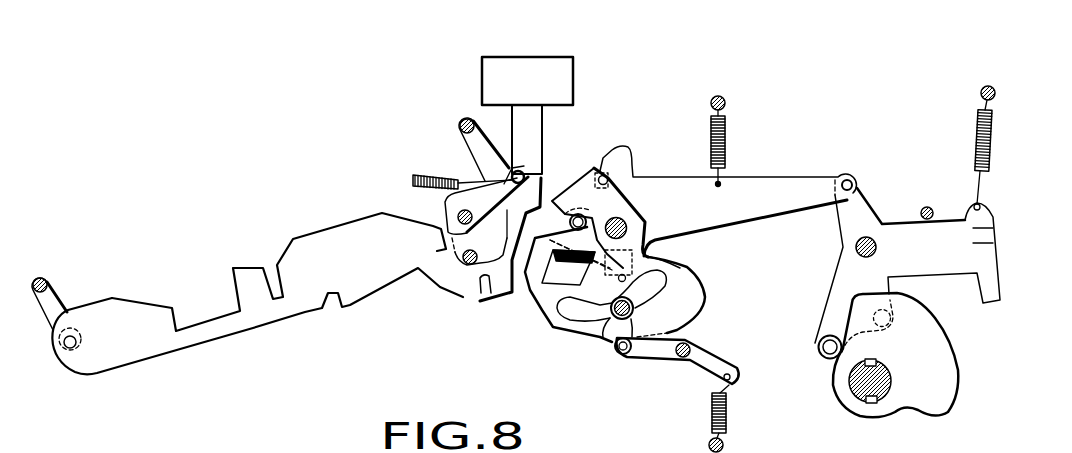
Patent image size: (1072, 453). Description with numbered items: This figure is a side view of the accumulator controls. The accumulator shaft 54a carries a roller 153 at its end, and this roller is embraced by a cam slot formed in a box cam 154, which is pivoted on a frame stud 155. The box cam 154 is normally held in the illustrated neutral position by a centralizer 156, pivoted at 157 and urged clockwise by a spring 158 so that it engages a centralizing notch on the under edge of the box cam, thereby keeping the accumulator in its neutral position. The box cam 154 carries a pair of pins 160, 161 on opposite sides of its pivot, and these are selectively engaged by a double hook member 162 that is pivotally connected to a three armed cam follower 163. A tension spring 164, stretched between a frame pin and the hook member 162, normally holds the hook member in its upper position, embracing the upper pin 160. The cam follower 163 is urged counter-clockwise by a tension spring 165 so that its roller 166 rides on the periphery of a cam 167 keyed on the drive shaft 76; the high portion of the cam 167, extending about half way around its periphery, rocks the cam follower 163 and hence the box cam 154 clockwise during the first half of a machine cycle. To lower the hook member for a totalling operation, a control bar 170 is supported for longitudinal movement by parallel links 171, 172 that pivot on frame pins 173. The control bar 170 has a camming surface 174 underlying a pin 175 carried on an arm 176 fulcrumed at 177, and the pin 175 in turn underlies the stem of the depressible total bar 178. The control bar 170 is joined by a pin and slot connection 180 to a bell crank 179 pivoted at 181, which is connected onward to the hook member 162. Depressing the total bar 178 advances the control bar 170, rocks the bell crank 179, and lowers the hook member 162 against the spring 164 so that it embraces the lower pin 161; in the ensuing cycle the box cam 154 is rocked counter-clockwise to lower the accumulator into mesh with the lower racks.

The control bar 170 is at (305, 312).
The parallel link 171 is at (52, 296).
The frame pin 173 is at (43, 278).
The parallel link 172 is at (462, 138).
The total bar 178 is at (573, 83).
The pin 175 is at (522, 170).
The camming surface 174 is at (530, 193).
The arm 176 is at (450, 197).
The fulcrum 177 is at (457, 220).
The pivot 181 is at (467, 262).
The bell crank 179 is at (520, 252).
The pin and slot connection 180 is at (483, 290).
The frame stud 155 is at (628, 228).
The pin 160 is at (603, 172).
The double hook member 162 is at (753, 187).
The three armed cam follower 163 is at (897, 223).
The tension spring 164 is at (725, 133).
The tension spring 165 is at (977, 133).
The roller 166 is at (818, 349).
The cam 167 is at (837, 387).
The drive shaft 76 is at (860, 387).
The box cam 154 is at (565, 333).
The pin 161 is at (618, 280).
The accumulator shaft 54a is at (631, 299).
The roller 153 is at (616, 347).
The centralizer 156 is at (640, 354).
The pivot 157 is at (690, 348).
The spring 158 is at (712, 413).